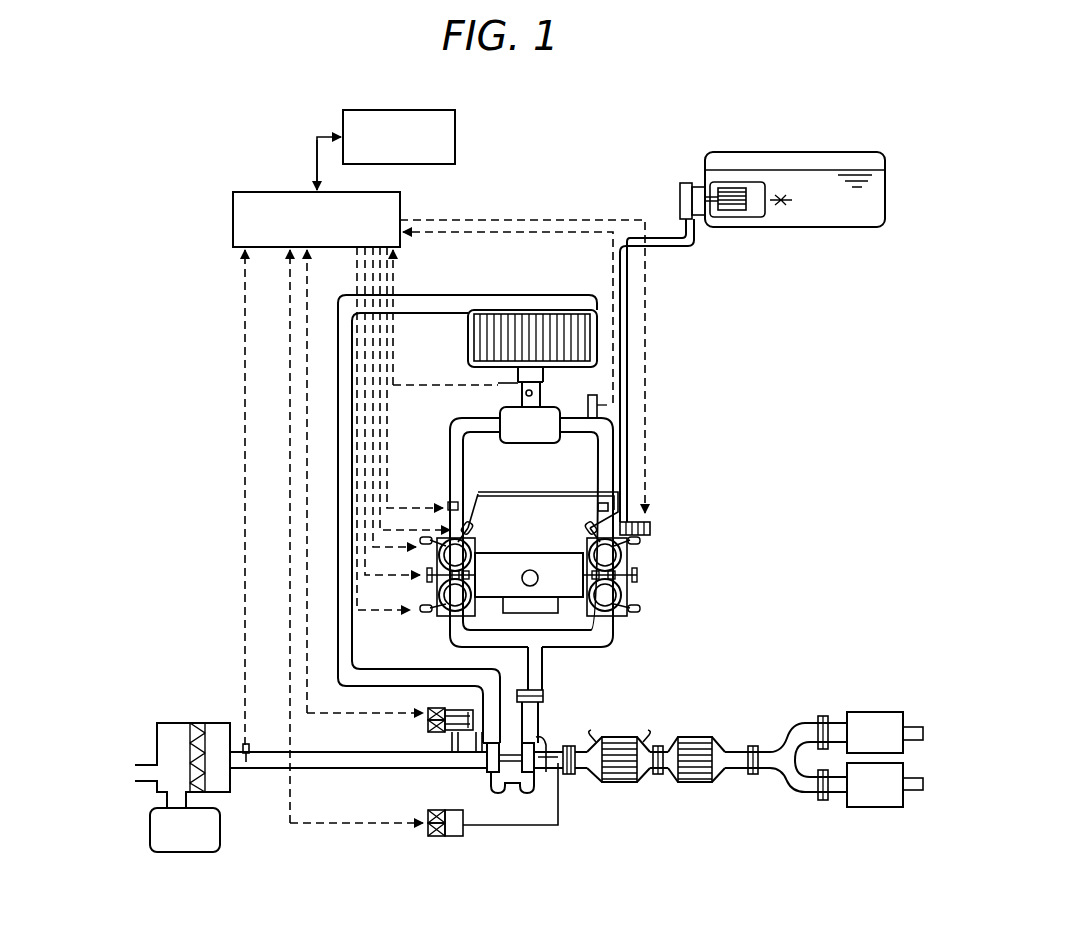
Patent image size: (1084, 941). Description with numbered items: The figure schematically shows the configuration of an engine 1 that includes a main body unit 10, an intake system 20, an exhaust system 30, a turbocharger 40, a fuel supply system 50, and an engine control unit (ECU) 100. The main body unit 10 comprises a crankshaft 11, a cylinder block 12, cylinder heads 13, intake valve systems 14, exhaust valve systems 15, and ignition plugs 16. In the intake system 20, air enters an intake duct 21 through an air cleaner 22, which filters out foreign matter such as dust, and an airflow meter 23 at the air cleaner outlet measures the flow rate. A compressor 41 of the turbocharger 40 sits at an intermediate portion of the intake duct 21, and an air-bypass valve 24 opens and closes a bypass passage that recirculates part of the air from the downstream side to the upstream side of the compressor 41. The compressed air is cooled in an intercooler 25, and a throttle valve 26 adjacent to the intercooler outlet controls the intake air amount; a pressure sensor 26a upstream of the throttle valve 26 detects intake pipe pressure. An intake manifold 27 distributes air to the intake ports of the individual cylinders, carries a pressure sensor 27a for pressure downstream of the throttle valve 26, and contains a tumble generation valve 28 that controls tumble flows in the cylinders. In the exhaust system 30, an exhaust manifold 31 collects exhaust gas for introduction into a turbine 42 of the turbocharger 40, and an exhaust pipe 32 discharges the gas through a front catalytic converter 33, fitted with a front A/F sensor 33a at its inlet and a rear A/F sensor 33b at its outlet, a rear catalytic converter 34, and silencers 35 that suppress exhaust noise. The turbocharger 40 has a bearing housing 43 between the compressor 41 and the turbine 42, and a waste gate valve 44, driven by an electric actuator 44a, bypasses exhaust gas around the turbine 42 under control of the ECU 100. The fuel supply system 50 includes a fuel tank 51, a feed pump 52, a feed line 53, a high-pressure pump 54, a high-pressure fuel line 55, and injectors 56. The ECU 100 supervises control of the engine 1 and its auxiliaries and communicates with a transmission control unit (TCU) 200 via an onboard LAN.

The engine 1 is at (203, 238).
The engine control unit (ECU) 100 is at (243, 192).
The transmission control unit (TCU) 200 is at (343, 110).
The fuel supply system 50 is at (596, 192).
The fuel tank 51 is at (810, 152).
The feed pump 52 is at (682, 186).
The feed line 53 is at (625, 307).
The high-pressure pump 54 is at (647, 527).
The main body unit 10 is at (655, 590).
The crankshaft 11 is at (538, 582).
The cylinder block 12 is at (534, 596).
The cylinder heads 13 is at (628, 588).
The intake valve systems 14 is at (616, 556).
The exhaust valve systems 15 is at (628, 606).
The ignition plugs 16 is at (637, 575).
The high-pressure fuel line 55 is at (478, 492).
The injectors 56 is at (458, 531).
The intake system 20 is at (313, 502).
The intake duct 21 is at (337, 573).
The air cleaner 22 is at (158, 733).
The airflow meter 23 is at (246, 762).
The air-bypass valve 24 is at (434, 735).
The intercooler 25 is at (592, 337).
The throttle valve 26 is at (538, 393).
The pressure sensor 26a is at (498, 382).
The intake manifold 27 is at (612, 453).
The pressure sensor 27a is at (598, 414).
The tumble generation valve 28 is at (608, 507).
The exhaust system 30 is at (757, 788).
The exhaust manifold 31 is at (450, 627).
The exhaust pipe 32 is at (738, 767).
The front catalytic converter 33 is at (620, 781).
The front A/F sensor 33a is at (592, 735).
The rear A/F sensor 33b is at (648, 737).
The rear catalytic converter 34 is at (696, 781).
The silencers 35 is at (873, 807).
The turbocharger 40 is at (504, 818).
The compressor 41 is at (492, 769).
The turbine 42 is at (527, 769).
The bearing housing 43 is at (517, 781).
The waste gate valve 44 is at (545, 757).
The electric actuator 44a is at (430, 832).